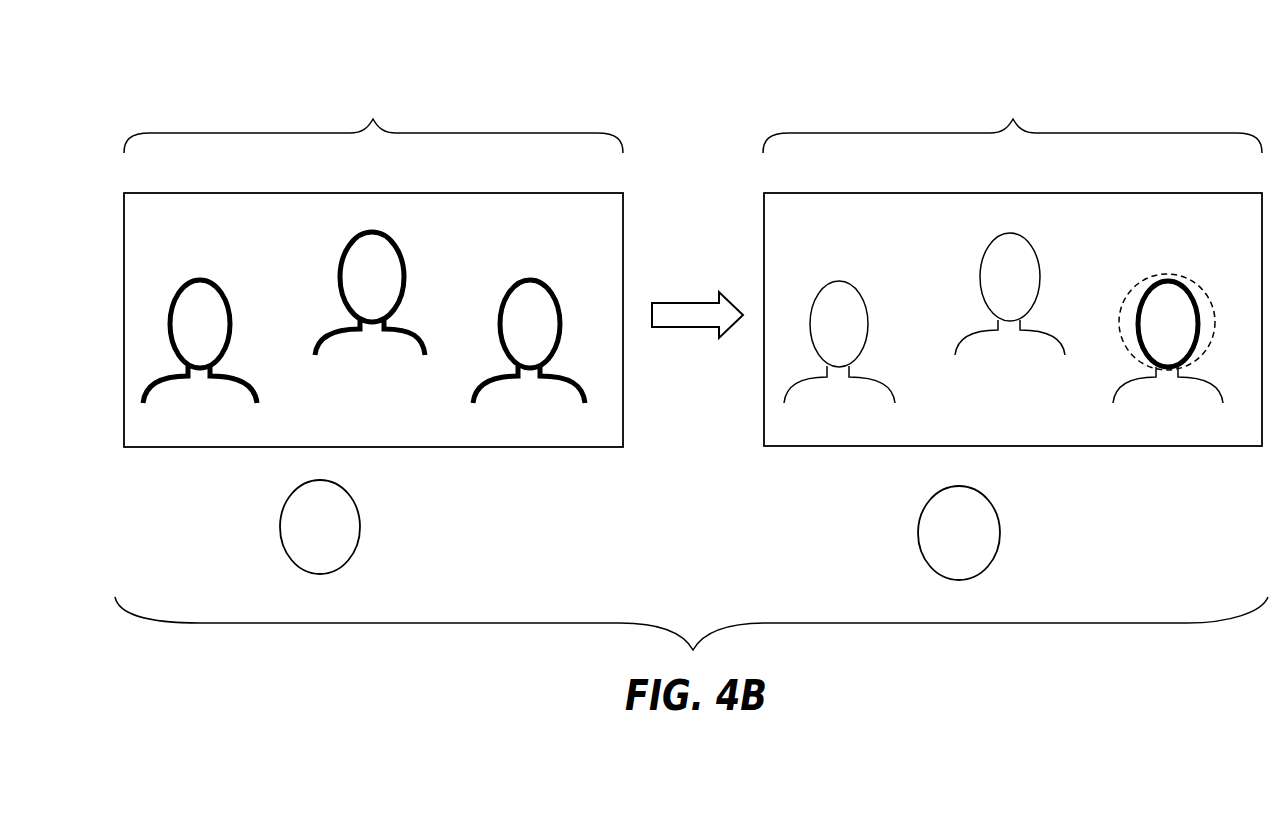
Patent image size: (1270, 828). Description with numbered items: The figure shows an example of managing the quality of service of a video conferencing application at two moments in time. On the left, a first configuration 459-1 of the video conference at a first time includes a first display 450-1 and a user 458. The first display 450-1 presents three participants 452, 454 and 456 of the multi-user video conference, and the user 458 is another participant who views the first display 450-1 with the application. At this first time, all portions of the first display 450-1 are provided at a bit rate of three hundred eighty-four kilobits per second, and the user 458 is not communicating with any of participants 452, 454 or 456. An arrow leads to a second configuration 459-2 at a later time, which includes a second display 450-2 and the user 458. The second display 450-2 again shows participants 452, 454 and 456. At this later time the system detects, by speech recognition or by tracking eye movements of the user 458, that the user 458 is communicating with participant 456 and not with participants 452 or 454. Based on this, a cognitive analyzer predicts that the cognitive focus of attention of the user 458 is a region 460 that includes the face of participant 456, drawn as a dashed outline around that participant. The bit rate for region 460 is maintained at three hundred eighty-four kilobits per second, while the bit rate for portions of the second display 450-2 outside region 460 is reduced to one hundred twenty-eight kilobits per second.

The first configuration 459-1 is at (373, 123).
The second configuration 459-2 is at (1012, 123).
The first display 450-1 is at (458, 192).
The second display 450-2 is at (1083, 192).
The participant 452 is at (217, 282).
The participant 454 is at (402, 262).
The participant 456 is at (552, 288).
The user 458 is at (362, 532).
The region 460 is at (1173, 275).